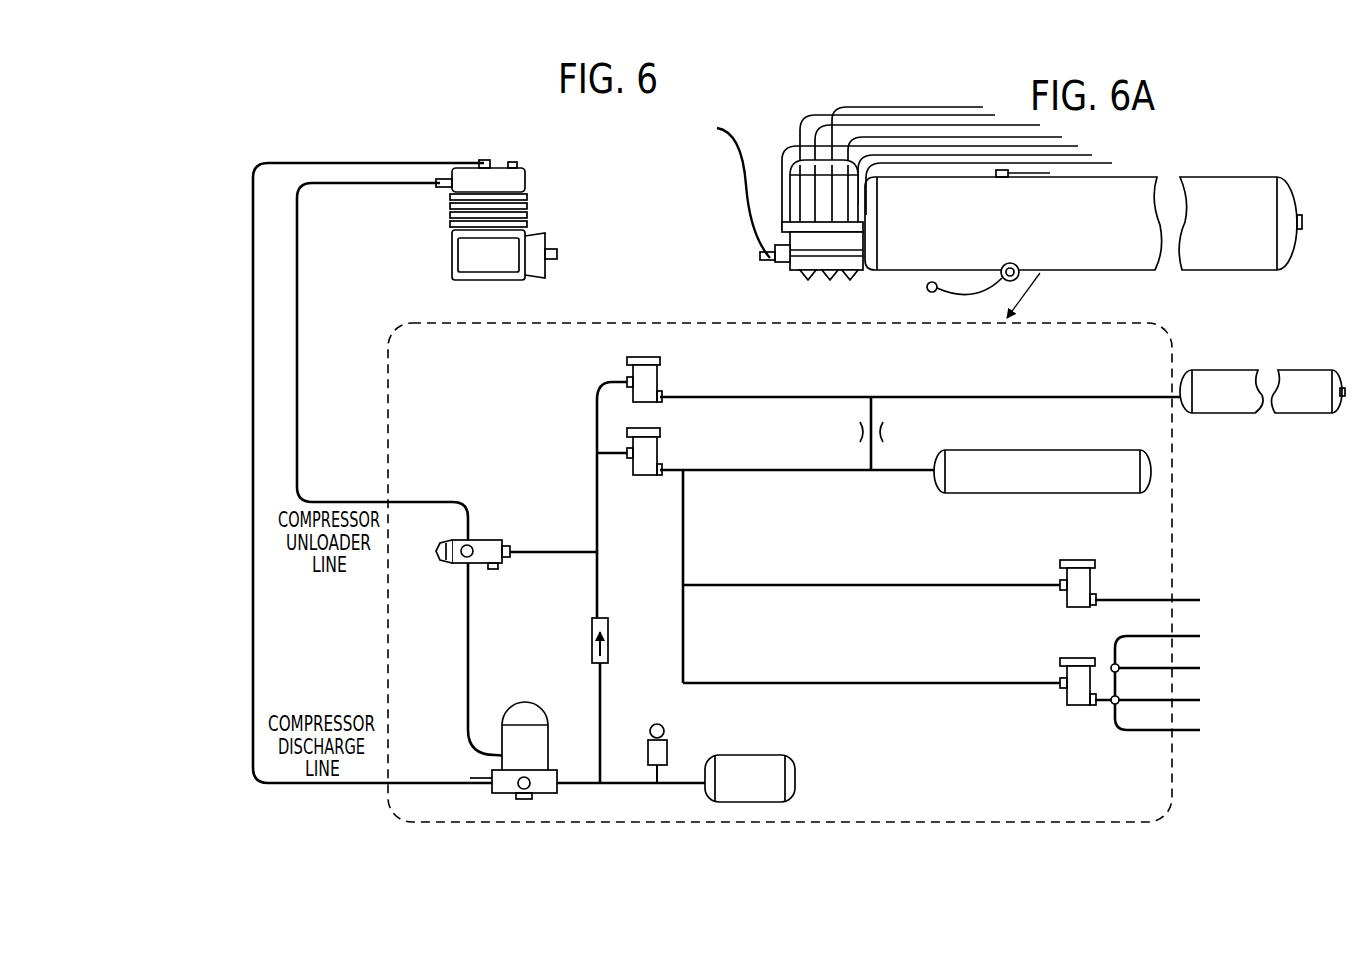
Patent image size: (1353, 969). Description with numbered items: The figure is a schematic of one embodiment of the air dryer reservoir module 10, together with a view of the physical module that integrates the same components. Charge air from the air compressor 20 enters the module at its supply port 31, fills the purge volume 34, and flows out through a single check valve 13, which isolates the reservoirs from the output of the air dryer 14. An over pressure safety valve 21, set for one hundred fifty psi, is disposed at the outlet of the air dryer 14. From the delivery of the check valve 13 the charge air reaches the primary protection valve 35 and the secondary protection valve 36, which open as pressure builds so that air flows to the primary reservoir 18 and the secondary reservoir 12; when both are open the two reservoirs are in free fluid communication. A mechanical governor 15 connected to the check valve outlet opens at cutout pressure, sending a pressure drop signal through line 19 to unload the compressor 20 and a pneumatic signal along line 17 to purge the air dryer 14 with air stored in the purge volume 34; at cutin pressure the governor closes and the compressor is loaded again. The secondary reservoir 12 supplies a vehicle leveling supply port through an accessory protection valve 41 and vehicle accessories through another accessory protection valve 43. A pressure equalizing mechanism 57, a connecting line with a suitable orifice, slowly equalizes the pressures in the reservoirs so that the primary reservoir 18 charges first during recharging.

In FIG. 6A, the air dryer reservoir module 10 is at (840, 282).
In FIG. 6, the secondary reservoir 12 is at (950, 445).
In FIG. 6, the check valve 13 is at (612, 626).
In FIG. 6, the air dryer 14 is at (556, 745).
In FIG. 6, the mechanical governor 15 is at (490, 535).
In FIG. 6, the line 17 is at (462, 683).
In FIG. 6, the primary reservoir 18 is at (1222, 365).
In FIG. 6, the line 19 is at (305, 343).
In FIG. 6, the air compressor 20 is at (446, 193).
In FIG. 6, the over pressure safety valve 21 is at (670, 736).
In FIG. 6, the supply port 31 is at (492, 800).
In FIG. 6A, the supply port 31 is at (768, 262).
In FIG. 6, the purge volume 34 is at (803, 780).
In FIG. 6, the primary protection valve 35 is at (645, 352).
In FIG. 6, the secondary protection valve 36 is at (635, 425).
In FIG. 6, the accessory protection valve 41 is at (1067, 555).
In FIG. 6, the accessory protection valve 43 is at (1073, 653).
In FIG. 6, the pressure equalizing mechanism 57 is at (884, 438).